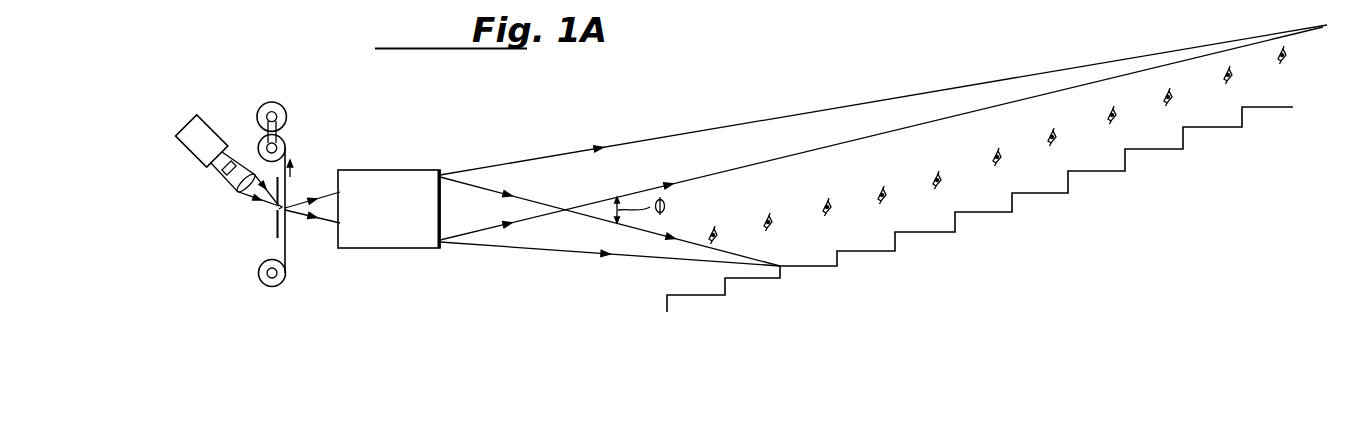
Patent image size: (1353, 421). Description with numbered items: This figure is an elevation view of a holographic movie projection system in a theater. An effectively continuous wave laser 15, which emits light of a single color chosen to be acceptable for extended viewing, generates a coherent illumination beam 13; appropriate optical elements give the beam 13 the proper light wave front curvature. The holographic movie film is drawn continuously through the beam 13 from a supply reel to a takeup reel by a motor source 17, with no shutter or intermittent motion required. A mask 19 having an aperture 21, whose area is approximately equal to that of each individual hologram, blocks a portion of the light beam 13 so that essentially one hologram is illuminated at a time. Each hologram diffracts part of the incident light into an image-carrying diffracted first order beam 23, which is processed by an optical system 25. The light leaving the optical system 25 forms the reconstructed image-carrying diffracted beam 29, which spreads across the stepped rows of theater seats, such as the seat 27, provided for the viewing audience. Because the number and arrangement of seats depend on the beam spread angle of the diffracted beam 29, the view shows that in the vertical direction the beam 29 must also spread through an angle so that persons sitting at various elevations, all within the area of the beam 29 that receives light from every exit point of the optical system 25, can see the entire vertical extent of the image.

The coherent illumination beam 13 is at (262, 199).
The continuous wave laser 15 is at (203, 133).
The motor source 17 is at (282, 106).
The mask 19 is at (275, 228).
The aperture 21 is at (277, 207).
The image-carrying diffracted first order beam 23 is at (327, 207).
The optical system 25 is at (398, 225).
The theater seat 27 is at (996, 244).
The reconstructed image-carrying diffracted beam 29 is at (692, 198).